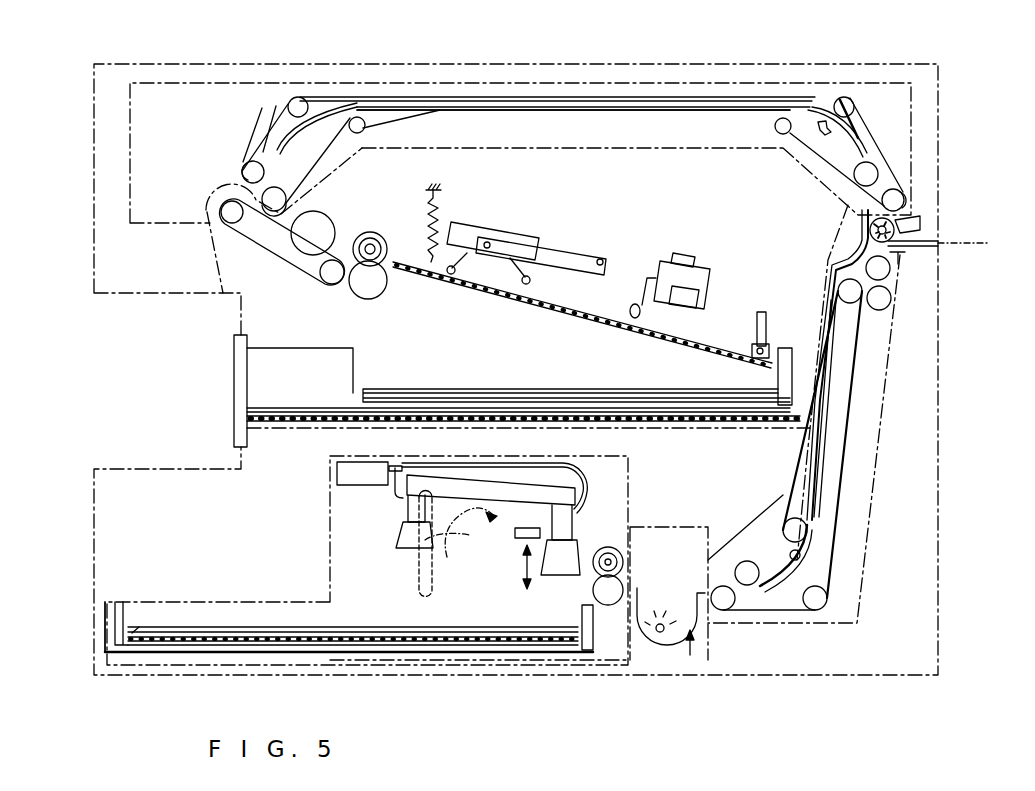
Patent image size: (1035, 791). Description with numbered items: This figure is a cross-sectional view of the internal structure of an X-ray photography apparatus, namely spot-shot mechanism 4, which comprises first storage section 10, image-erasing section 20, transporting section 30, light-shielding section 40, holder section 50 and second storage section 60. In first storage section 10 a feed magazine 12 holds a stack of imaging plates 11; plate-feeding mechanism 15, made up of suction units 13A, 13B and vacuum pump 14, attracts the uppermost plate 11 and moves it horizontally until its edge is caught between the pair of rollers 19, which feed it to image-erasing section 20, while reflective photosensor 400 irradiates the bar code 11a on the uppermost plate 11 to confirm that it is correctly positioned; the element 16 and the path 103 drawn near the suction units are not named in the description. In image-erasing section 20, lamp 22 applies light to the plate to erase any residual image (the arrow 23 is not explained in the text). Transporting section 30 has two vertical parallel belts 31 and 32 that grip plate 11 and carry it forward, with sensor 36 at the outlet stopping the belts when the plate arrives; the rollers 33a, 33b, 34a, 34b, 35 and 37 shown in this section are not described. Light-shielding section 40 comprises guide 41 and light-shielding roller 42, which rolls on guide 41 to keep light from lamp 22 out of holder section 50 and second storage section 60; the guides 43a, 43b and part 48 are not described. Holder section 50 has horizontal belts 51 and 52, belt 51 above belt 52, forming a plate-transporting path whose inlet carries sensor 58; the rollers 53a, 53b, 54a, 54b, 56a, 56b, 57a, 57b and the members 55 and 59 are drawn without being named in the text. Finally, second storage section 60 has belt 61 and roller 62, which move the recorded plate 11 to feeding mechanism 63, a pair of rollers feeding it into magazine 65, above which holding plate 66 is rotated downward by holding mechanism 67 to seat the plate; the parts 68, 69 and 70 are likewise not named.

The spot-shot mechanism 4 is at (943, 95).
The first storage section 10 is at (630, 490).
The imaging plate 11 is at (470, 97).
The bar code 11a is at (110, 648).
The feed magazine 12 is at (588, 652).
The suction unit 13A is at (562, 573).
The suction unit 13B is at (408, 548).
The vacuum pump 14 is at (360, 485).
The plate-feeding mechanism 15 is at (505, 480).
The lift arrow / actuator 16 is at (528, 588).
The rollers 19 is at (608, 547).
The image-erasing section 20 is at (650, 527).
The lamp 22 is at (660, 634).
The light path arrow 23 is at (690, 656).
The transporting section 30 is at (877, 518).
The belt 31 is at (860, 360).
The belt 32 is at (812, 465).
The roller 33a is at (725, 610).
The roller 33b is at (860, 295).
The roller 34a is at (748, 566).
The roller 34b is at (885, 305).
The belt roller 35 is at (792, 520).
The sensor 36 is at (888, 272).
The pressing roller 37 is at (802, 556).
The light-shielding section 40 is at (955, 235).
The guide 41 is at (858, 250).
The light-shielding roller 42 is at (870, 234).
The guide plate 43a is at (822, 300).
The guide plate 43b is at (905, 256).
The sensor 48 is at (920, 222).
The holder section 50 is at (652, 86).
The belt 51 is at (534, 97).
The belt 52 is at (480, 113).
The roller 53a is at (900, 193).
The roller 53b is at (253, 165).
The roller 54a is at (858, 180).
The roller 54b is at (282, 206).
The belt 55 is at (293, 127).
The roller 56a is at (850, 100).
The roller 56b is at (303, 98).
The roller 57a is at (779, 129).
The roller 57b is at (362, 126).
The sensor 58 is at (822, 132).
The belt tension member 59 is at (290, 104).
The second storage section 60 is at (212, 228).
The belt 61 is at (280, 242).
The roller 62 is at (318, 228).
The feeding mechanism 63 is at (378, 297).
The magazine 65 is at (785, 350).
The holding plate 66 is at (558, 315).
The holding mechanism 67 is at (510, 236).
The spring 68 is at (425, 235).
The stopper 69 is at (755, 322).
The drive unit 70 is at (683, 252).
The sheet path 103 is at (434, 575).
The reflective photosensor 400 is at (515, 537).